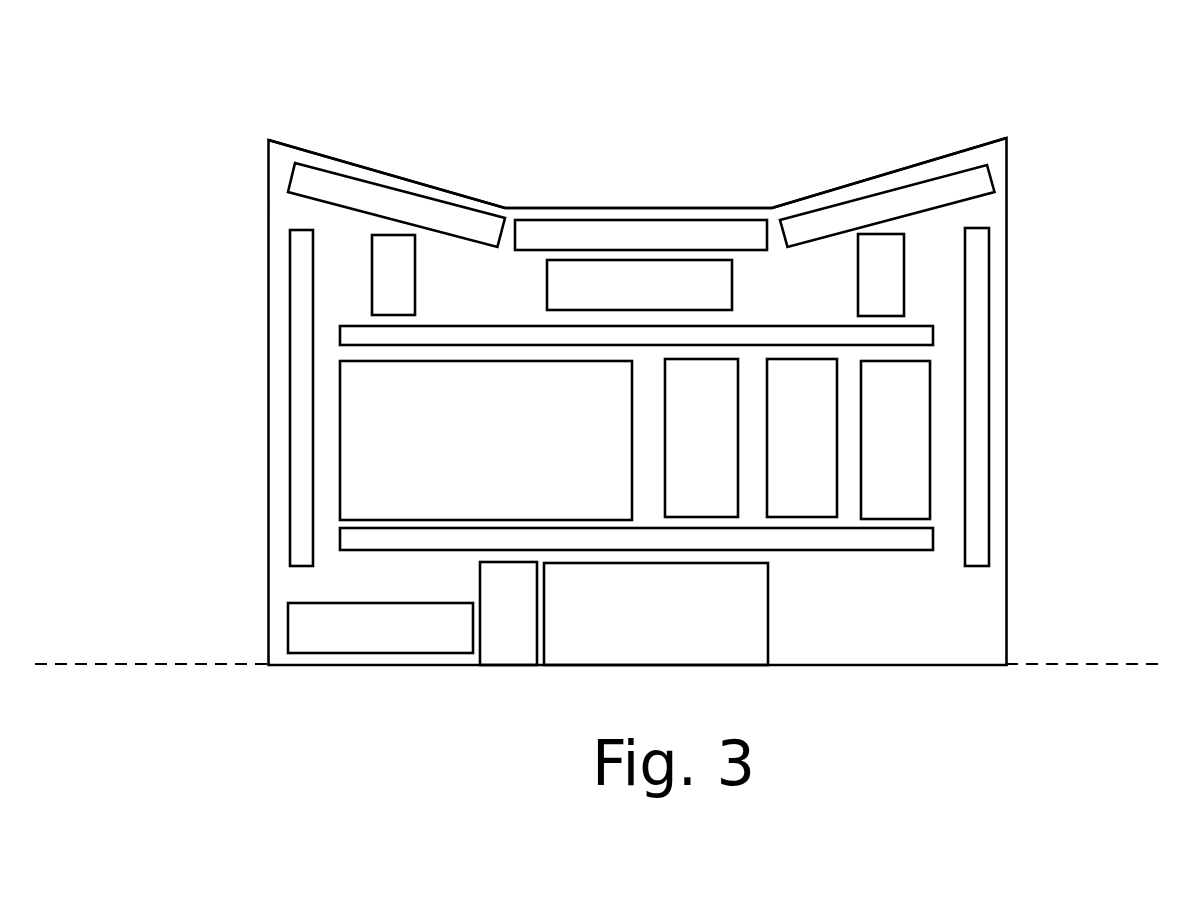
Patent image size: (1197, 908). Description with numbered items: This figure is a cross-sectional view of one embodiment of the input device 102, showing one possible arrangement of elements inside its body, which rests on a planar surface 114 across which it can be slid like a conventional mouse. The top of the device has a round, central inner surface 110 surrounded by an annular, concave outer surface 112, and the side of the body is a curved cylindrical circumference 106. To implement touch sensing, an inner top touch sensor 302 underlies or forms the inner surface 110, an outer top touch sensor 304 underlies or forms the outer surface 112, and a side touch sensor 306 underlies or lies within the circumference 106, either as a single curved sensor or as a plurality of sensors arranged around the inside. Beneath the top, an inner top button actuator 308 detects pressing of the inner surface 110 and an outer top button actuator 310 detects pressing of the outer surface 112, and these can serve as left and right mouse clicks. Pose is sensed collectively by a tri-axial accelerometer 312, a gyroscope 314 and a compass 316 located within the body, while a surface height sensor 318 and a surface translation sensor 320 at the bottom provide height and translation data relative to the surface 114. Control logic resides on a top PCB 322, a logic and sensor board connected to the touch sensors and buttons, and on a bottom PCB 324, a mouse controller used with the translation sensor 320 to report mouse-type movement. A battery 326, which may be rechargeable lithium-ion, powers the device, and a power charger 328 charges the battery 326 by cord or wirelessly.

The input device 102 is at (548, 78).
The cylindrical circumference 106 is at (268, 371).
The inner surface 110 is at (597, 206).
The outer surface 112 is at (384, 165).
The planar surface 114 is at (222, 674).
The inner top touch sensor 302 is at (648, 232).
The outer top touch sensor 304 is at (318, 188).
The side touch sensor 306 is at (306, 252).
The inner top button actuator 308 is at (581, 291).
The outer top button actuator 310 is at (400, 291).
The tri-axial accelerometer 312 is at (720, 492).
The gyroscope 314 is at (816, 451).
The compass 316 is at (873, 481).
The surface height sensor 318 is at (516, 632).
The surface translation sensor 320 is at (718, 642).
The top PCB 322 is at (917, 333).
The bottom PCB 324 is at (852, 541).
The battery 326 is at (362, 437).
The power charger 328 is at (315, 630).